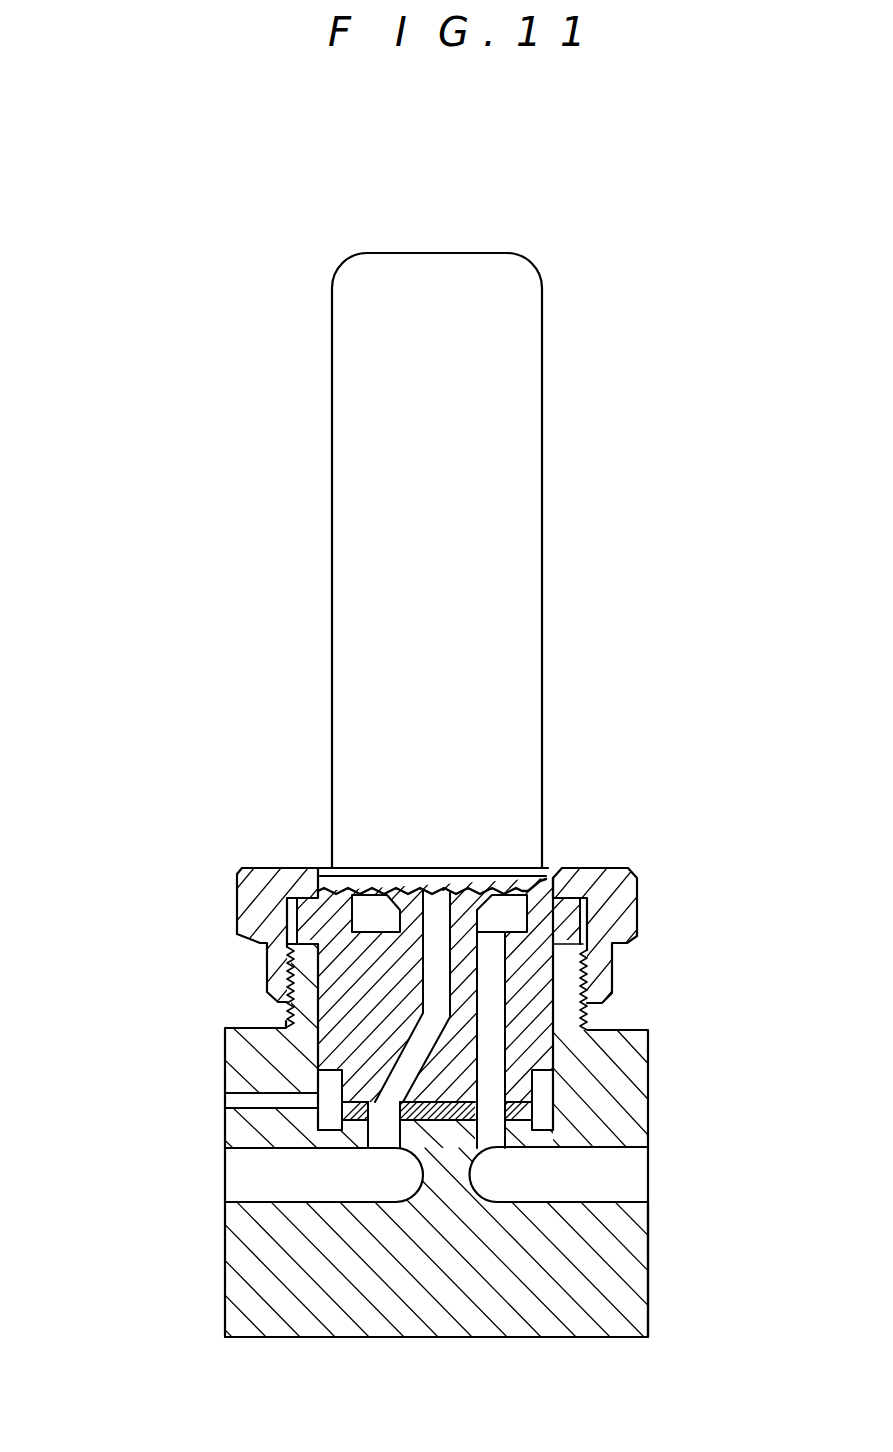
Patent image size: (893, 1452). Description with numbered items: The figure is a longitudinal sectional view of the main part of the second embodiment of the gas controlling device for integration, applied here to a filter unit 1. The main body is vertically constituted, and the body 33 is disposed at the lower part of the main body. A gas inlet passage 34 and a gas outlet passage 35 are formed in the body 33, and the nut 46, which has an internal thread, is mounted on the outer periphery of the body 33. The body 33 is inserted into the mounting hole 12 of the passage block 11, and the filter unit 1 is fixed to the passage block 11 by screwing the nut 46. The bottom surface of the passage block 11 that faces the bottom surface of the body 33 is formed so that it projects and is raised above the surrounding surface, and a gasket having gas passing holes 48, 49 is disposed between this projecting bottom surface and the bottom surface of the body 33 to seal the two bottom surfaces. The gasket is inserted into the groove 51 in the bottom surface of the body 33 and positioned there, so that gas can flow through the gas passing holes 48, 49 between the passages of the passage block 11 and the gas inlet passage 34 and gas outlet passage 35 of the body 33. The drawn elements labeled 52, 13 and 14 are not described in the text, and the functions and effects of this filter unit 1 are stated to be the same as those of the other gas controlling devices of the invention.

The filter unit 1 is at (555, 537).
The body 33 is at (547, 863).
The nut 46 is at (243, 894).
The mounting hole 12 is at (550, 1010).
The gas inlet passage 34 is at (418, 1041).
The gas outlet passage 35 is at (493, 1045).
The passage block 11 is at (650, 1108).
The groove 51 is at (330, 1083).
The filter plate 52 is at (345, 1113).
The inlet port 13 is at (240, 1163).
The gas passing hole 48 is at (390, 1152).
The gas passing hole 49 is at (470, 1173).
The base block 14 is at (622, 1186).